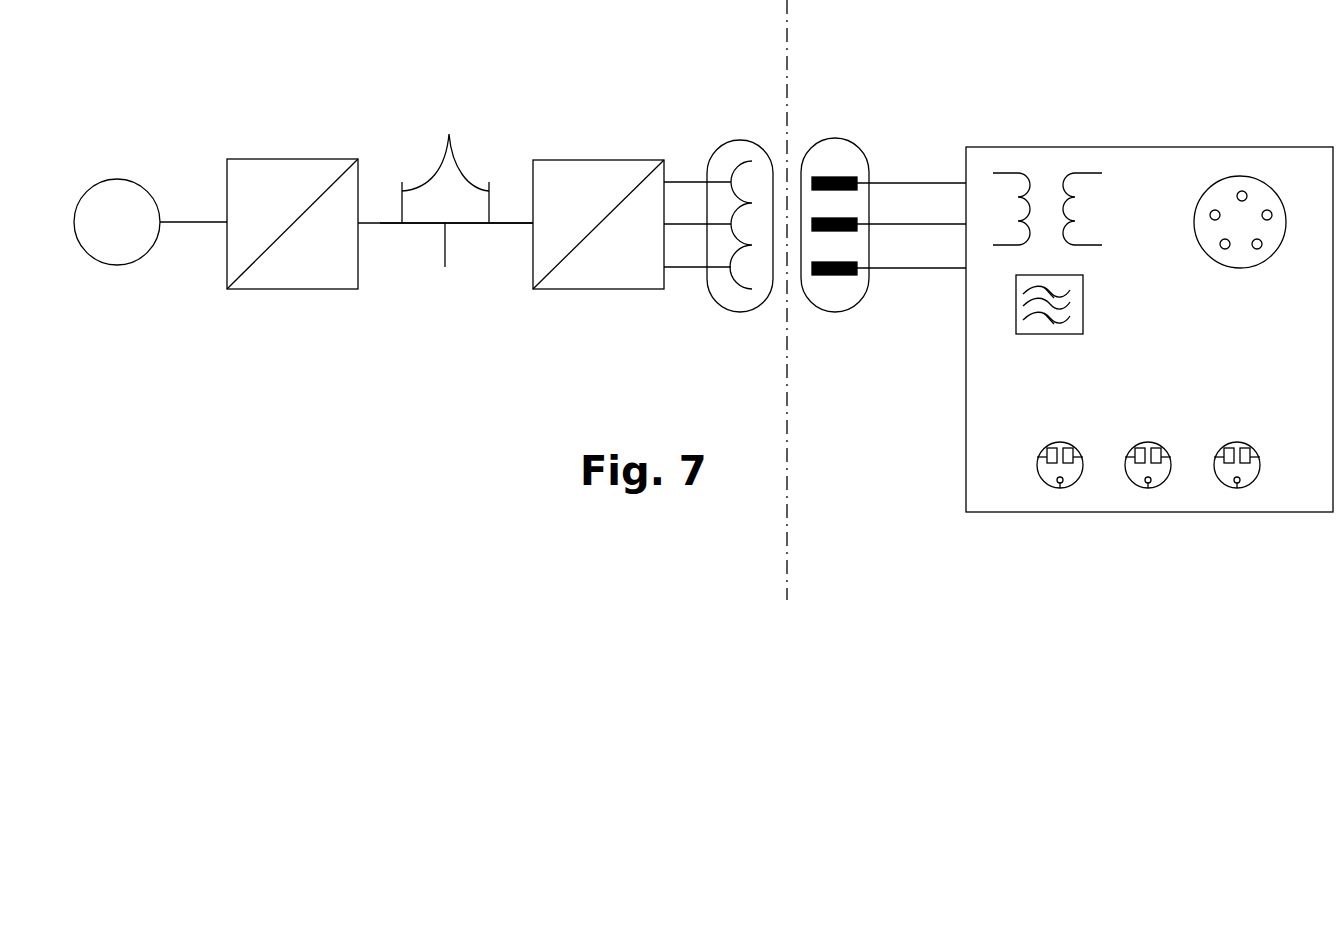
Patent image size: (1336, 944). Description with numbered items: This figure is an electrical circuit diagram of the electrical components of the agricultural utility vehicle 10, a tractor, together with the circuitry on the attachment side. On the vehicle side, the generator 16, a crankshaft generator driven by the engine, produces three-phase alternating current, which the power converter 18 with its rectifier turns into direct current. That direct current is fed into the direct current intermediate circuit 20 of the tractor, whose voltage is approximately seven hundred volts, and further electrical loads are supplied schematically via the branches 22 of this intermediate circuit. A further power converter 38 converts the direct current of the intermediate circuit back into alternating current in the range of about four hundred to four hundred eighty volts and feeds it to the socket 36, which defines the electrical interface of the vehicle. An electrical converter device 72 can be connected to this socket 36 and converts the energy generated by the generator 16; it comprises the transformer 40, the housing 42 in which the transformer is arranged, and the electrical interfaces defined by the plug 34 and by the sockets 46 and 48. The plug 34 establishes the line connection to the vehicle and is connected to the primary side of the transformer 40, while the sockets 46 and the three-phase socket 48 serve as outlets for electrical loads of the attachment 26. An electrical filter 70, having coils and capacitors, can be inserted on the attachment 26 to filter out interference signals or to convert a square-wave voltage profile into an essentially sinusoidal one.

The agricultural utility vehicle 10 is at (387, 498).
The generator 16 is at (120, 265).
The power converter 18 is at (290, 290).
The direct current intermediate circuit 20 is at (420, 224).
The branches 22 is at (515, 330).
The power converter 38 is at (597, 157).
The socket 36 is at (738, 140).
The plug 34 is at (833, 138).
The attachment 26 is at (857, 496).
The housing 42 is at (1093, 513).
The electrical converter device 72 is at (1210, 109).
The transformer 40 is at (1030, 177).
The three-phase socket 48 is at (1258, 195).
The electrical filter 70 is at (1013, 305).
The sockets 46 is at (1045, 477).